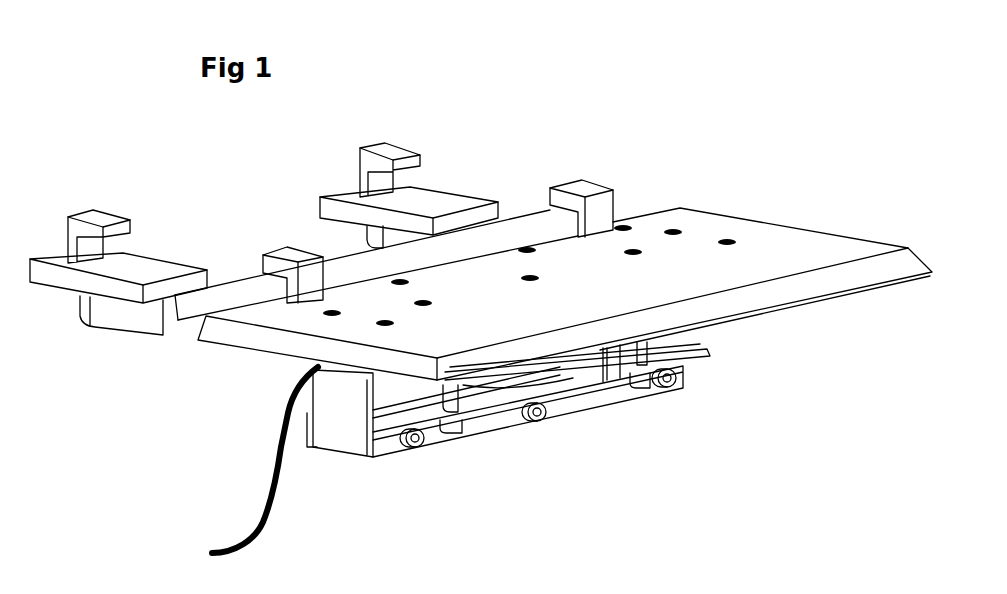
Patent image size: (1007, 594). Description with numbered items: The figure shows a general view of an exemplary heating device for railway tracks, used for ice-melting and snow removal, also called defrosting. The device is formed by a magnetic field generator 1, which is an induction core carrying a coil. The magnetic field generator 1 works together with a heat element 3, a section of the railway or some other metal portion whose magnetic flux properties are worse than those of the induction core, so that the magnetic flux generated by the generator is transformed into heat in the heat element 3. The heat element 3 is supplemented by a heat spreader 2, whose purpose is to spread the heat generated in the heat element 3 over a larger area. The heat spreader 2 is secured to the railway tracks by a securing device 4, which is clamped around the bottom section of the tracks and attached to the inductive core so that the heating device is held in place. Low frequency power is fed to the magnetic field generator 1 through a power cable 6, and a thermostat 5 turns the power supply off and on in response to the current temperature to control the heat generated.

The magnetic field generator 1 is at (575, 367).
The heat spreader 2 is at (752, 232).
The heat element 3 is at (158, 322).
The securing device 4 is at (423, 152).
The thermostat 5 is at (288, 367).
The power cable 6 is at (275, 497).